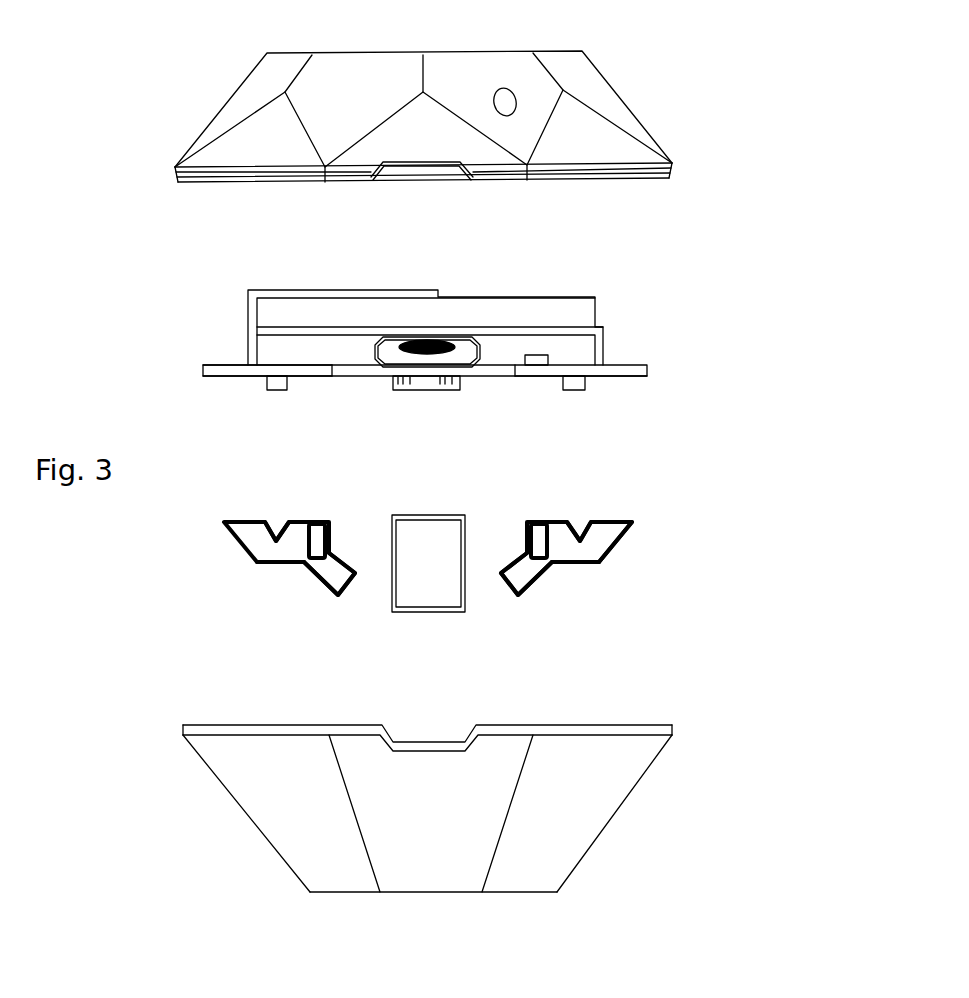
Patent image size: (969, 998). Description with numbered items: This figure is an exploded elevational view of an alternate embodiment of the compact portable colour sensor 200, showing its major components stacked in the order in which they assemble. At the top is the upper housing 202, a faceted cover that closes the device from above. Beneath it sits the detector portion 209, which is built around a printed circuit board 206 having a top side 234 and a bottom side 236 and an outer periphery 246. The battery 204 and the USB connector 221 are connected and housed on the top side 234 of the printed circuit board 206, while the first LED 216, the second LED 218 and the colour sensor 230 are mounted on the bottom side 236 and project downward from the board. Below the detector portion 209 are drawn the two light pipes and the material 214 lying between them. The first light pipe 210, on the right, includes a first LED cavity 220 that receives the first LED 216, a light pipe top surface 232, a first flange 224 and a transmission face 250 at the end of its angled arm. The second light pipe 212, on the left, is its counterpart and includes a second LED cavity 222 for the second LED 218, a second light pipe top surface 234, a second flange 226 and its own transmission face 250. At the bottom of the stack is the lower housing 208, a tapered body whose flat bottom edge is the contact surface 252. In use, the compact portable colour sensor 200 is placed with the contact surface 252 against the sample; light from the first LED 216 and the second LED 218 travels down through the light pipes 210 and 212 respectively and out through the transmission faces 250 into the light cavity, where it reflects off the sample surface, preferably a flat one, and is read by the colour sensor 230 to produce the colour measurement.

The compact portable colour sensor 200 is at (140, 108).
The upper housing 202 is at (622, 102).
The detector portion 209 is at (110, 271).
The USB connector 221 is at (360, 348).
The battery 204 is at (595, 308).
The printed circuit board 206 is at (648, 362).
The top side 234 is at (220, 363).
The bottom side 236 is at (215, 390).
The periphery 246 is at (648, 370).
The first LED 216 is at (587, 385).
The second LED 218 is at (270, 385).
The colour sensor 230 is at (410, 392).
The second LED cavity 222 is at (273, 520).
The first LED cavity 220 is at (598, 492).
The light pipe top surface 232 is at (613, 517).
The second light pipe 212 is at (260, 542).
The first light pipe 210 is at (597, 543).
The second flange 226 is at (300, 565).
The first flange 224 is at (548, 563).
The transmission face 250 is at (350, 595).
The material 214 is at (427, 618).
The lower housing 208 is at (562, 847).
The contact surface 252 is at (363, 902).